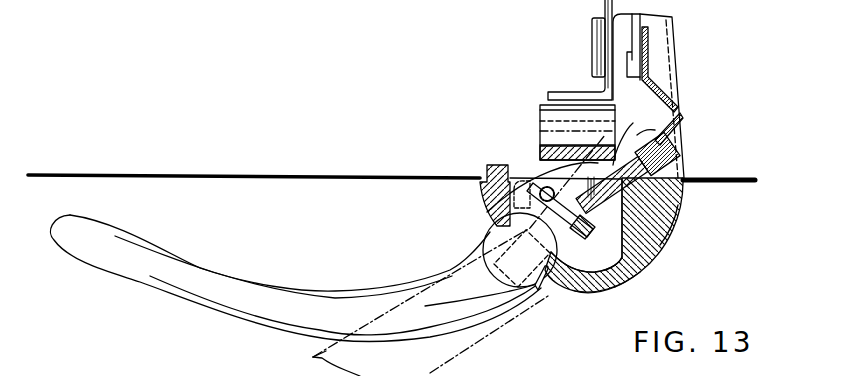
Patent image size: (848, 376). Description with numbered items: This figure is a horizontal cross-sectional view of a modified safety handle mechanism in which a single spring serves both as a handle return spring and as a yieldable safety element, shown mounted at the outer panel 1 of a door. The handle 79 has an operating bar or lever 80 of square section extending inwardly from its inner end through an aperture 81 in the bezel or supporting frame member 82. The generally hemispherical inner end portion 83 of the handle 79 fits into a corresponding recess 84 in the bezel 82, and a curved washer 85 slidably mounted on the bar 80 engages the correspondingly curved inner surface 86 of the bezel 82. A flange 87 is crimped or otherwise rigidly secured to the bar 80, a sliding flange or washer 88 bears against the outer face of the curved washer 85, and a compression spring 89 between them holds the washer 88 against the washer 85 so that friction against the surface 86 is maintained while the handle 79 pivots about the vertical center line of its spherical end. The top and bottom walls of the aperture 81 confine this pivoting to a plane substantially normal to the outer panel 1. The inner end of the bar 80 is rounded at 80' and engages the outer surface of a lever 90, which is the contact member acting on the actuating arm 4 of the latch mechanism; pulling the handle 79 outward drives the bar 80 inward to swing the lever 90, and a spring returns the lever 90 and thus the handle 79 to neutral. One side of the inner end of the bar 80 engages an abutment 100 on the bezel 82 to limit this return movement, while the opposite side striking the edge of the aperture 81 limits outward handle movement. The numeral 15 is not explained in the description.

The outer panel 1 is at (160, 176).
The arm 4 is at (605, 86).
The lever arm 15 is at (459, 255).
The handle 79 is at (206, 272).
The operating bar or lever 80 is at (630, 235).
The rounded inner end 80' is at (648, 96).
The aperture 81 is at (532, 185).
The bezel or supporting frame member 82 is at (492, 197).
The hemispherical inner end portion 83 is at (548, 285).
The recess 84 is at (498, 225).
The curved washer 85 is at (612, 271).
The curved inner surface 86 is at (604, 284).
The flange 87 is at (648, 242).
The flange or washer 88 is at (638, 274).
The compression spring 89 is at (648, 225).
The lever 90 is at (528, 172).
The abutment 100 is at (668, 131).